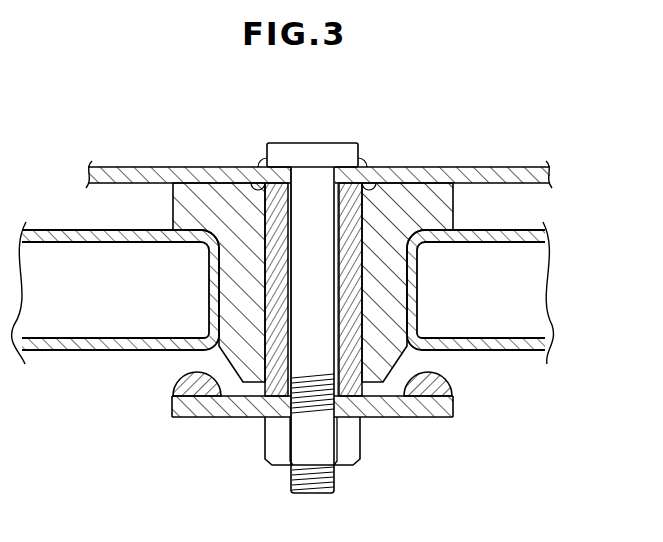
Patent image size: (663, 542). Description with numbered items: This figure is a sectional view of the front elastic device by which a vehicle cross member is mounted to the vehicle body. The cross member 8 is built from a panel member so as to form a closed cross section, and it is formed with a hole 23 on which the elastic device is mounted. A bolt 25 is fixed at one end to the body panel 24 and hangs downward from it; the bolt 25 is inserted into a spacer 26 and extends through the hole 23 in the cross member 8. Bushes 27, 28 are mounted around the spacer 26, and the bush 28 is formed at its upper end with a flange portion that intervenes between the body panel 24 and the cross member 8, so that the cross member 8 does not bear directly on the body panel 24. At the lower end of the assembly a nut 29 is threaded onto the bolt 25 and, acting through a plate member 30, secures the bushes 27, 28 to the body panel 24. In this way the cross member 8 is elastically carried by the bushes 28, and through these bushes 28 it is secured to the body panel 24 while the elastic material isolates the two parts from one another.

The cross member 8 is at (103, 330).
The hole 23 is at (218, 348).
The body panel 24 is at (160, 167).
The bolt 25 is at (305, 483).
The spacer 26 is at (265, 417).
The bush 27 is at (192, 418).
The bush 28 is at (413, 183).
The nut 29 is at (358, 448).
The plate member 30 is at (445, 418).